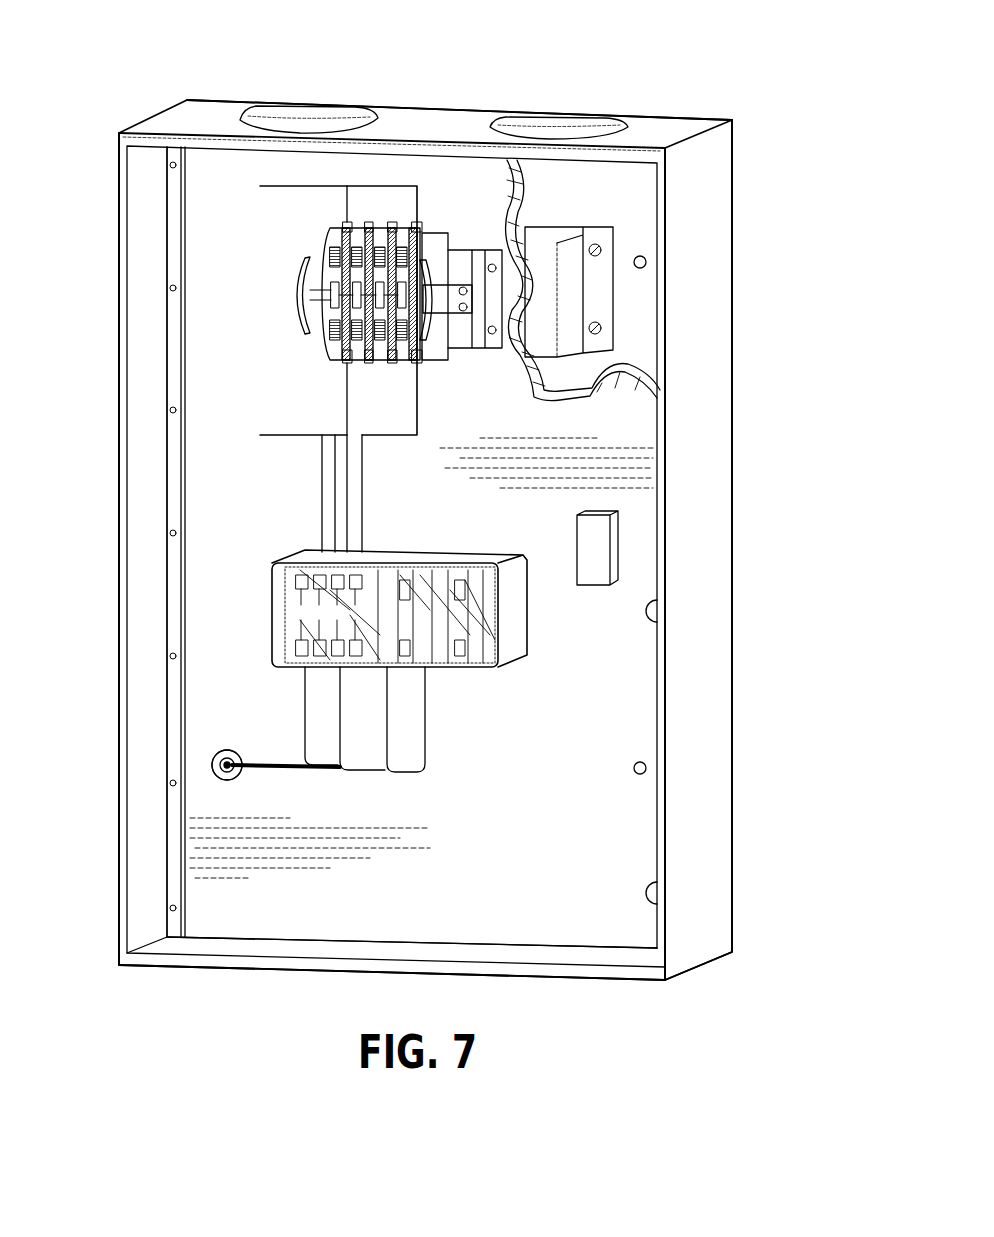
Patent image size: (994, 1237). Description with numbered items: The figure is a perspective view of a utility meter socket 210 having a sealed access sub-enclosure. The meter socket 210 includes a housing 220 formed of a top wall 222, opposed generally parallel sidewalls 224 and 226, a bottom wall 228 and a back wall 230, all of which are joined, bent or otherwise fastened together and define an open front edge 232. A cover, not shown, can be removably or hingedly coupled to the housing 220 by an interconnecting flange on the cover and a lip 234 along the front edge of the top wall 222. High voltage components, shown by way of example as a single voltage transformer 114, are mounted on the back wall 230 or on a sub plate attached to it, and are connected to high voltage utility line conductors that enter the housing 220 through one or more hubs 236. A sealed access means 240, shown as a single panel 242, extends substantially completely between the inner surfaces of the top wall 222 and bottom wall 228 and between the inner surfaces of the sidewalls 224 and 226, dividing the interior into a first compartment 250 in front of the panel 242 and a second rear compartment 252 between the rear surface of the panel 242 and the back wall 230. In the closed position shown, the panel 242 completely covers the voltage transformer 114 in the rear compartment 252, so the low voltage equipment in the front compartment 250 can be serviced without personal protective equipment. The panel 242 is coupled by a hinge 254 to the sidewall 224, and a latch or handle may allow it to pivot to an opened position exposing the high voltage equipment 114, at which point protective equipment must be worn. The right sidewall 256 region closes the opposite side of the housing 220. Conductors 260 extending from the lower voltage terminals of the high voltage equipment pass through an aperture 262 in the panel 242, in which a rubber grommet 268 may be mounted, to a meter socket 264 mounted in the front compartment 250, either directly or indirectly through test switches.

The utility meter socket 210 is at (128, 96).
The housing 220 is at (460, 98).
The top wall 222 is at (652, 132).
The sidewall 224 is at (137, 365).
The sidewall 226 is at (717, 510).
The bottom wall 228 is at (552, 953).
The back wall 230 is at (625, 207).
The open front edge 232 is at (665, 622).
The lip 234 is at (303, 146).
The hub 236 is at (337, 115).
The sealed access means 240 is at (236, 423).
The panel 242 is at (205, 555).
The first compartment 250 is at (665, 893).
The second compartment 252 is at (600, 375).
The hinge 254 is at (173, 210).
The right side wall 256 is at (720, 557).
The conductors 260 is at (297, 772).
The aperture 262 is at (225, 749).
The meter socket 264 is at (300, 245).
The rubber grommet 268 is at (212, 763).
The voltage transformer 114 is at (570, 303).